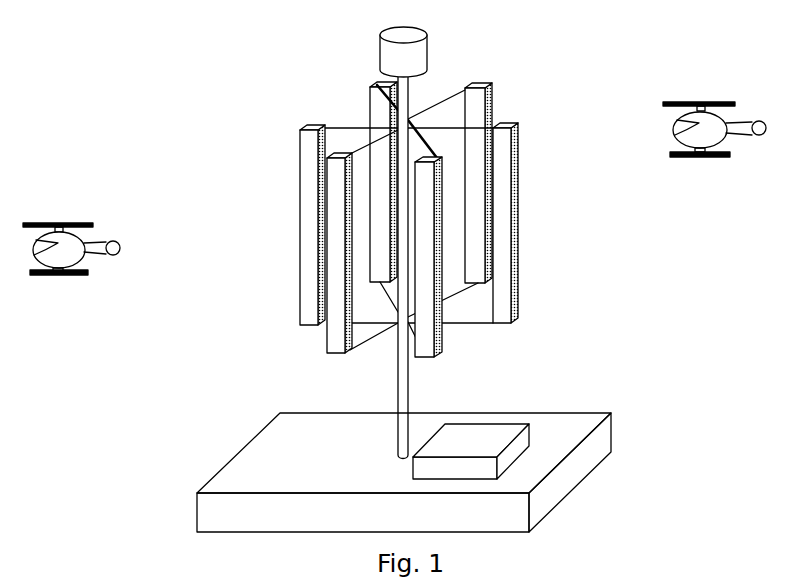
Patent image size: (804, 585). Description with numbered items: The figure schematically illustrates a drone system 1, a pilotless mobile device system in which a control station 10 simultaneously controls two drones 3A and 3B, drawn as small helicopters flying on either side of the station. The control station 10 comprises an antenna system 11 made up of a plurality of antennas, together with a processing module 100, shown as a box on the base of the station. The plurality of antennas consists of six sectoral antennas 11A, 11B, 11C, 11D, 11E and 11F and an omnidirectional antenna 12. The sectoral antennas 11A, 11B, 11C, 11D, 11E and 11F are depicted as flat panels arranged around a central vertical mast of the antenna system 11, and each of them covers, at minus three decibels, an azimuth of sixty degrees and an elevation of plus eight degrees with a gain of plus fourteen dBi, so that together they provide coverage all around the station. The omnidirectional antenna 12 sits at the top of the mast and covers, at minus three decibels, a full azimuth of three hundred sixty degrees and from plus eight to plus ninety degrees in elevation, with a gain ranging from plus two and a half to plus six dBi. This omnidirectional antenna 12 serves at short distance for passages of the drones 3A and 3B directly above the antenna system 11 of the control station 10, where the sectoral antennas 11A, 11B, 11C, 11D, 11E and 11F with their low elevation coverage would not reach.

The drone system 1 is at (429, 279).
The control station 10 is at (612, 438).
The processing module 100 is at (527, 443).
The antenna system 11 is at (413, 402).
The sectoral antenna 11A is at (518, 268).
The sectoral antenna 11B is at (492, 85).
The sectoral antenna 11C is at (370, 98).
The sectoral antenna 11D is at (300, 187).
The sectoral antenna 11E is at (327, 352).
The sectoral antenna 11F is at (442, 350).
The omnidirectional antenna 12 is at (380, 37).
The drone 3A is at (122, 250).
The drone 3B is at (735, 104).